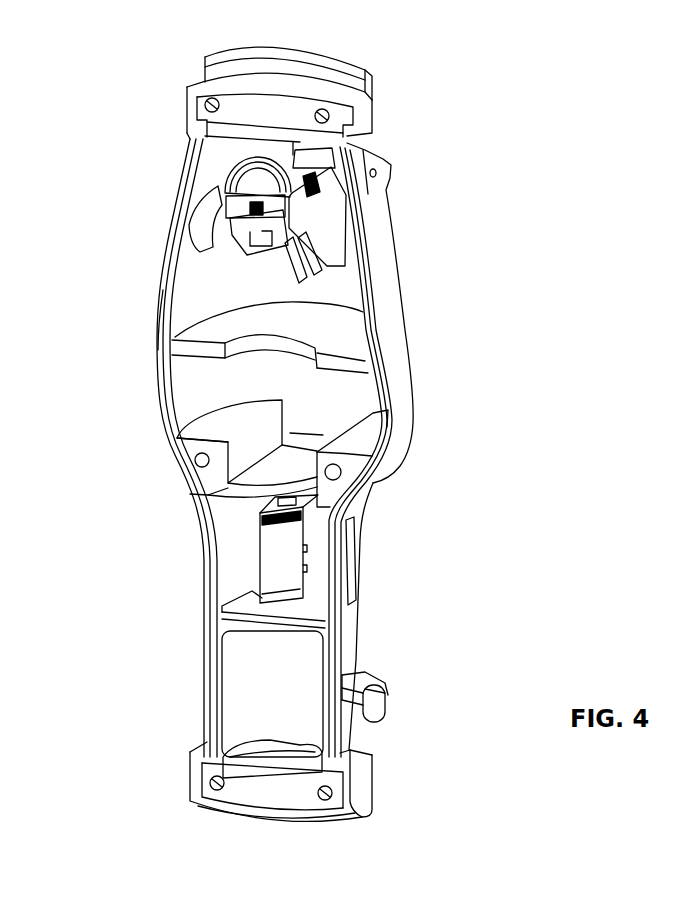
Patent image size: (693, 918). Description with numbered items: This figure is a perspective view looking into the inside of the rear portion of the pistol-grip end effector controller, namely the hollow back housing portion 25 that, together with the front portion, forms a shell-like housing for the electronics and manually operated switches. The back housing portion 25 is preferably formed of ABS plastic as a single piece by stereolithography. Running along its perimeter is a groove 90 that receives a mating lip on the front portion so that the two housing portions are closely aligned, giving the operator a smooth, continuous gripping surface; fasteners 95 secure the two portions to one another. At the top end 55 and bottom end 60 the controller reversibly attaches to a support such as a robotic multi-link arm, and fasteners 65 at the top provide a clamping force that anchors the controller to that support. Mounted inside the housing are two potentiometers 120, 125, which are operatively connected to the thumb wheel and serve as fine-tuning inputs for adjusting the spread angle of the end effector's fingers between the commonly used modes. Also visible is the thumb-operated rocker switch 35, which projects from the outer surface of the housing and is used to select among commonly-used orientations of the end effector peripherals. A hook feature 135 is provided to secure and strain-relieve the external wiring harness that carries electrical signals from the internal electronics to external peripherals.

The back housing portion 25 is at (158, 563).
The rocker switch 35 is at (391, 167).
The top end 55 is at (288, 82).
The bottom end 60 is at (363, 785).
The fasteners 65 is at (212, 102).
The groove 90 is at (163, 287).
The fasteners 95 is at (338, 475).
The potentiometer 120 is at (228, 181).
The potentiometer 125 is at (218, 242).
The hook feature 135 is at (386, 688).